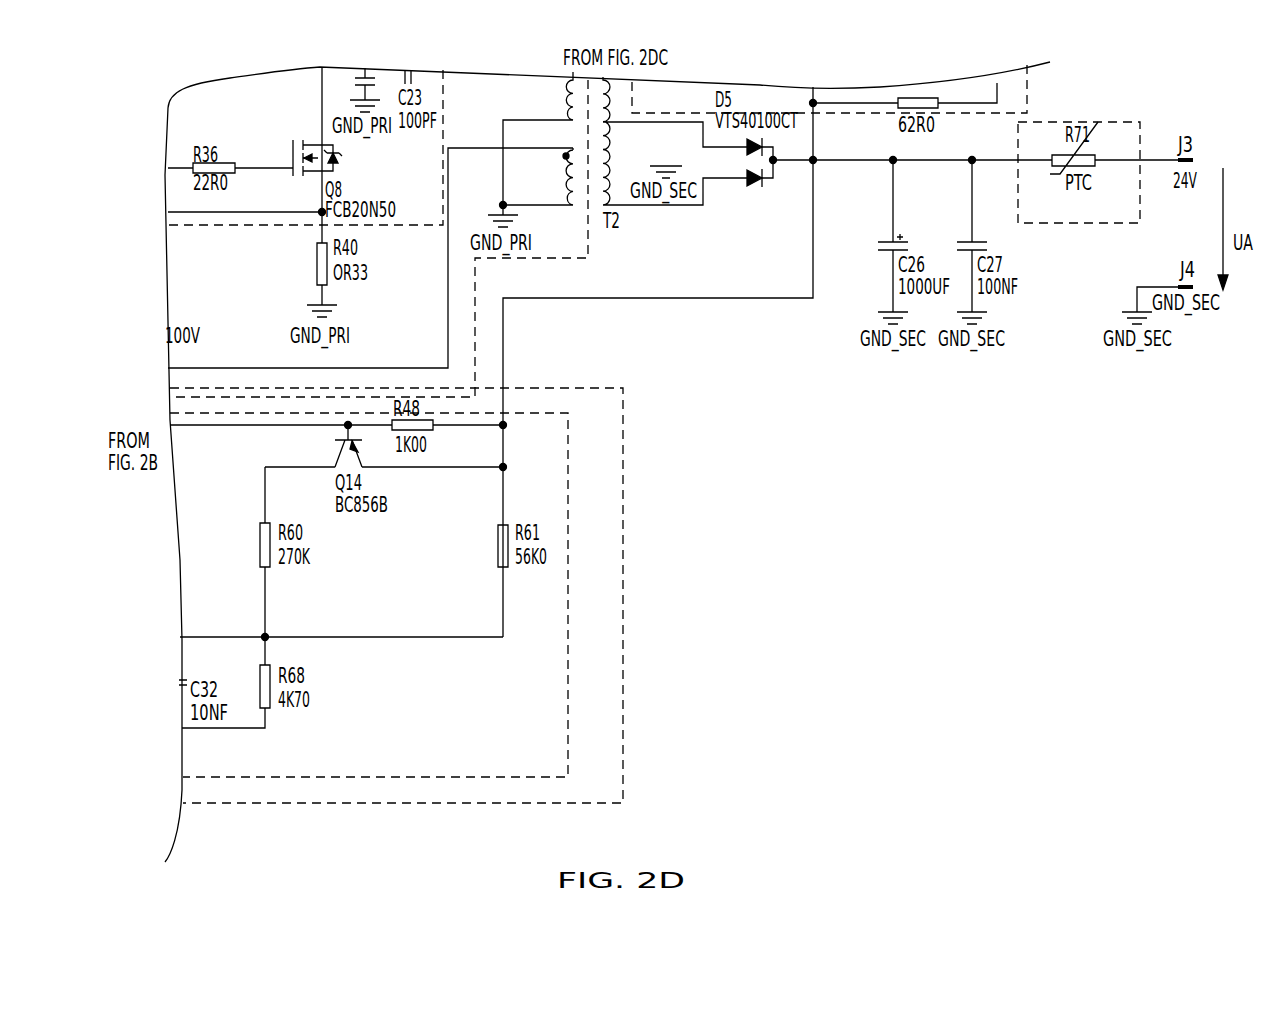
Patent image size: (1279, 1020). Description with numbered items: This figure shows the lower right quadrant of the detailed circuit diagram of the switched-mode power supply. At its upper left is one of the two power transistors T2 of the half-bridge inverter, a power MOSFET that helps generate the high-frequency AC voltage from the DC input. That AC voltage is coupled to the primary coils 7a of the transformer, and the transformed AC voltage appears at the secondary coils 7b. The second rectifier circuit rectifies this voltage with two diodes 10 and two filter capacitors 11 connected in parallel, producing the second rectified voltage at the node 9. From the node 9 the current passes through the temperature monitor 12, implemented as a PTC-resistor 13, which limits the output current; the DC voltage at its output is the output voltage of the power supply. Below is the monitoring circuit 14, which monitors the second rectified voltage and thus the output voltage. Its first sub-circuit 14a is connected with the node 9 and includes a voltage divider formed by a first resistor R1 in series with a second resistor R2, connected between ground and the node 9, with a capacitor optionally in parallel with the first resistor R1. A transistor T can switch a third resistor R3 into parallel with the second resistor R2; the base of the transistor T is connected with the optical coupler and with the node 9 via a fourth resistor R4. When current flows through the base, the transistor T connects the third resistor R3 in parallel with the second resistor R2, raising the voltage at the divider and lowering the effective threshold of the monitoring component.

The primary coils 7a is at (560, 175).
The secondary coils 7b is at (607, 185).
The node 9 is at (815, 163).
The diodes 10 is at (743, 177).
The filter capacitors 11 is at (968, 242).
The temperature monitor 12 is at (1072, 225).
The PTC-resistor 13 is at (1098, 122).
The monitoring circuit 14 is at (625, 725).
The first sub-circuit 14a is at (570, 478).
The power transistor T2 is at (292, 157).
The transistor T is at (340, 455).
The first resistor R1 is at (258, 672).
The second resistor R2 is at (497, 548).
The third resistor R3 is at (258, 545).
The fourth resistor R4 is at (437, 429).